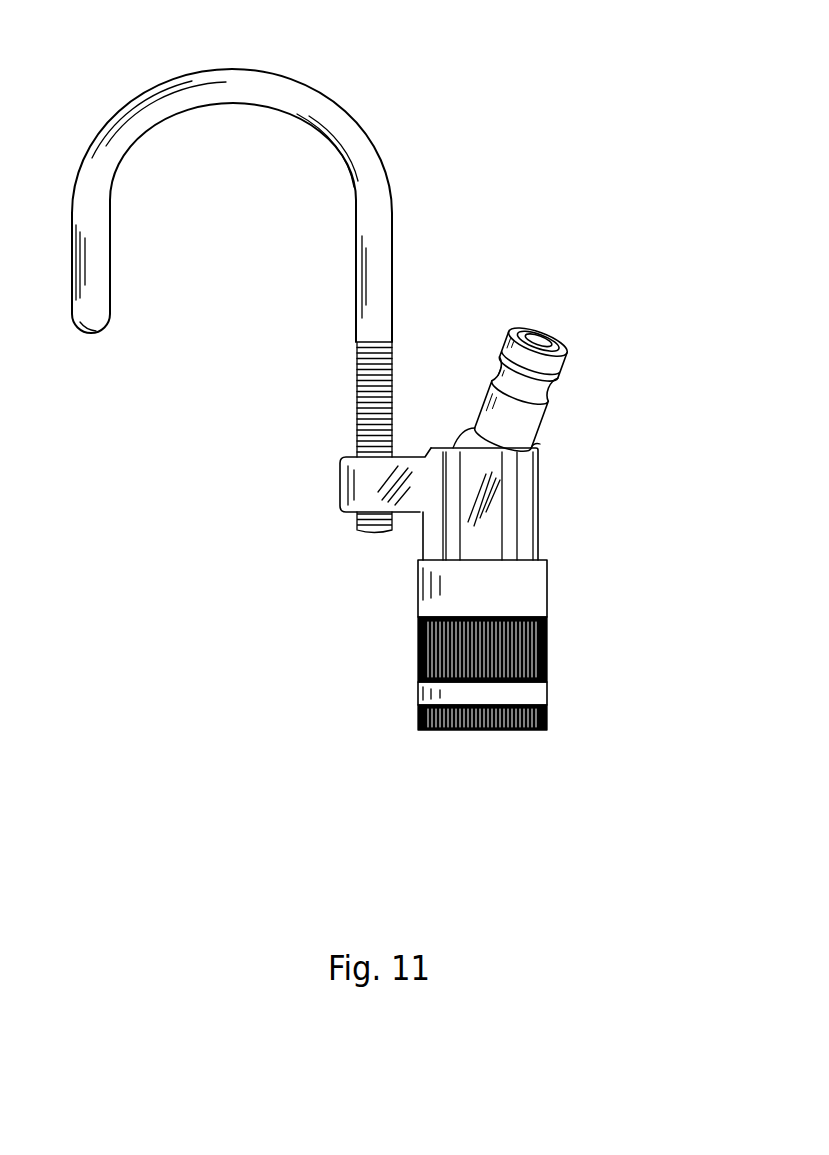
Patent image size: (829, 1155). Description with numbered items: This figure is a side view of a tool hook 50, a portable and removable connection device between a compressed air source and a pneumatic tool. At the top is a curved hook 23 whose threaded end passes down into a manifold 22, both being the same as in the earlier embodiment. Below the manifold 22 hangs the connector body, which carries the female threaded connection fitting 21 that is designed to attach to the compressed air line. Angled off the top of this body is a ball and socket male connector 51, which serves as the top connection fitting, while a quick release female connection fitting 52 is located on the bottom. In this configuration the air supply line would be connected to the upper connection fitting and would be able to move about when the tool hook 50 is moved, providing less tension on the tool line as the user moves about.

The tool hook 50 is at (568, 100).
The hook 23 is at (318, 92).
The manifold 22 is at (340, 488).
The female threaded connection fitting 21 is at (539, 510).
The quick release female connection fitting 52 is at (418, 715).
The ball and socket male connector 51 is at (540, 320).